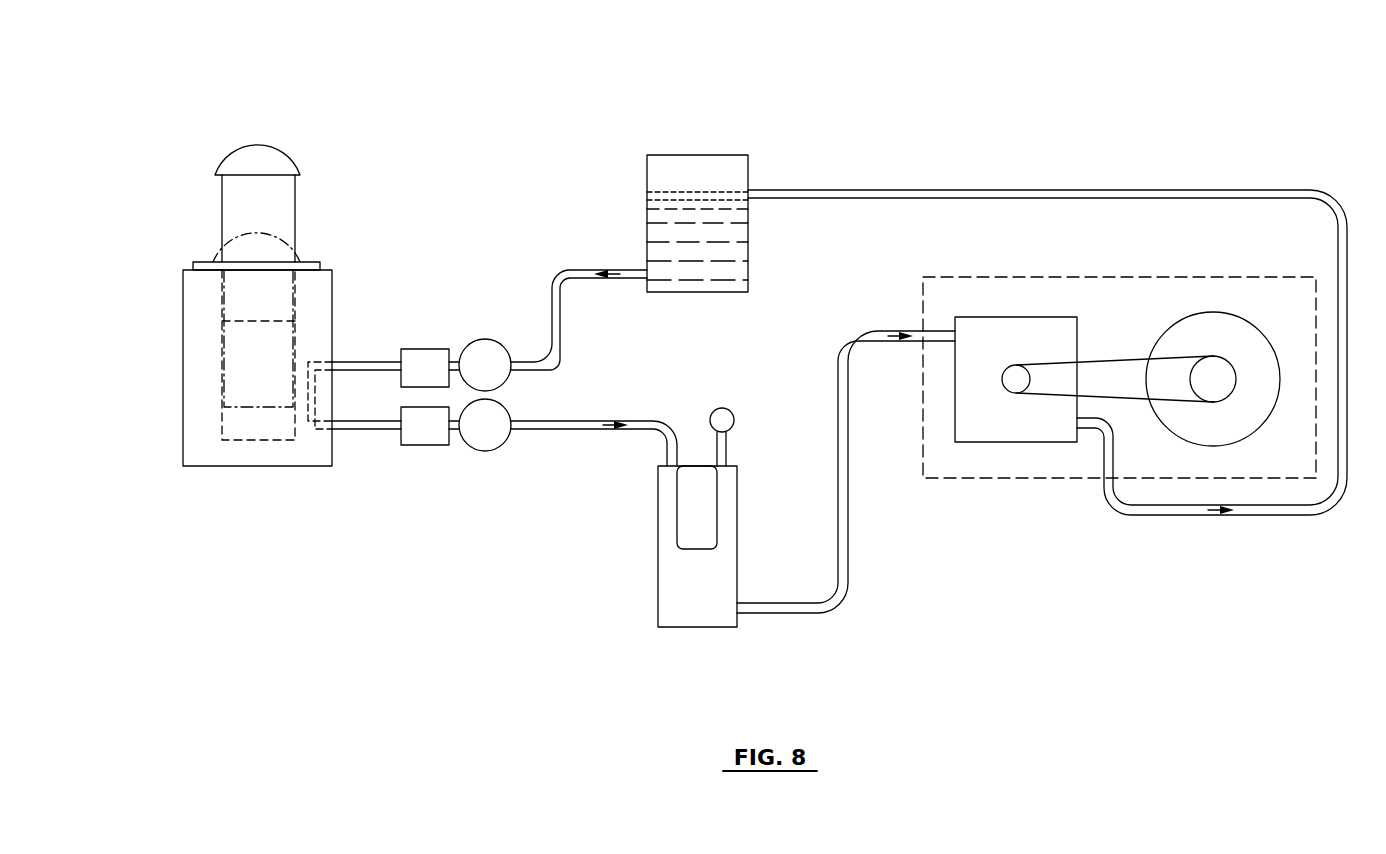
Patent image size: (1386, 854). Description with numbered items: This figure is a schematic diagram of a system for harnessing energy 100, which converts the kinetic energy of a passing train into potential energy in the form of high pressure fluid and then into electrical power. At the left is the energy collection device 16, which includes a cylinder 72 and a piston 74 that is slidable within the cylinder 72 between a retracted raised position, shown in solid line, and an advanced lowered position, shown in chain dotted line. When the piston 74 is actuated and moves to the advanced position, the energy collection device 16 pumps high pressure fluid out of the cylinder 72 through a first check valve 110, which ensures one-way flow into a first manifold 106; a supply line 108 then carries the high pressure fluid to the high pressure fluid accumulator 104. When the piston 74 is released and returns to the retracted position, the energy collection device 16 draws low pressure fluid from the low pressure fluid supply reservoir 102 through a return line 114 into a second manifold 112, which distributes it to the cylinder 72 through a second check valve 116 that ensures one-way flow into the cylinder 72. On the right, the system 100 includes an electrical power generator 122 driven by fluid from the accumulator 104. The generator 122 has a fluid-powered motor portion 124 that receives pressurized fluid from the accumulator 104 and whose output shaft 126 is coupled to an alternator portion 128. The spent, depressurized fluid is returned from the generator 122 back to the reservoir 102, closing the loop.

The system for harnessing energy 100 is at (1080, 97).
The energy collection device 16 is at (196, 148).
The piston 74 is at (305, 203).
The cylinder 72 is at (293, 333).
The second check valve 116 is at (421, 360).
The second manifold 112 is at (483, 352).
The return line 114 is at (577, 268).
The first check valve 110 is at (427, 432).
The first manifold 106 is at (489, 437).
The supply line 108 is at (570, 433).
The low pressure fluid supply reservoir 102 is at (750, 170).
The high pressure fluid accumulator 104 is at (737, 505).
The electrical power generator 122 is at (1107, 277).
The fluid-powered motor portion 124 is at (1007, 317).
The output shaft 126 is at (1003, 394).
The alternator portion 128 is at (1213, 313).